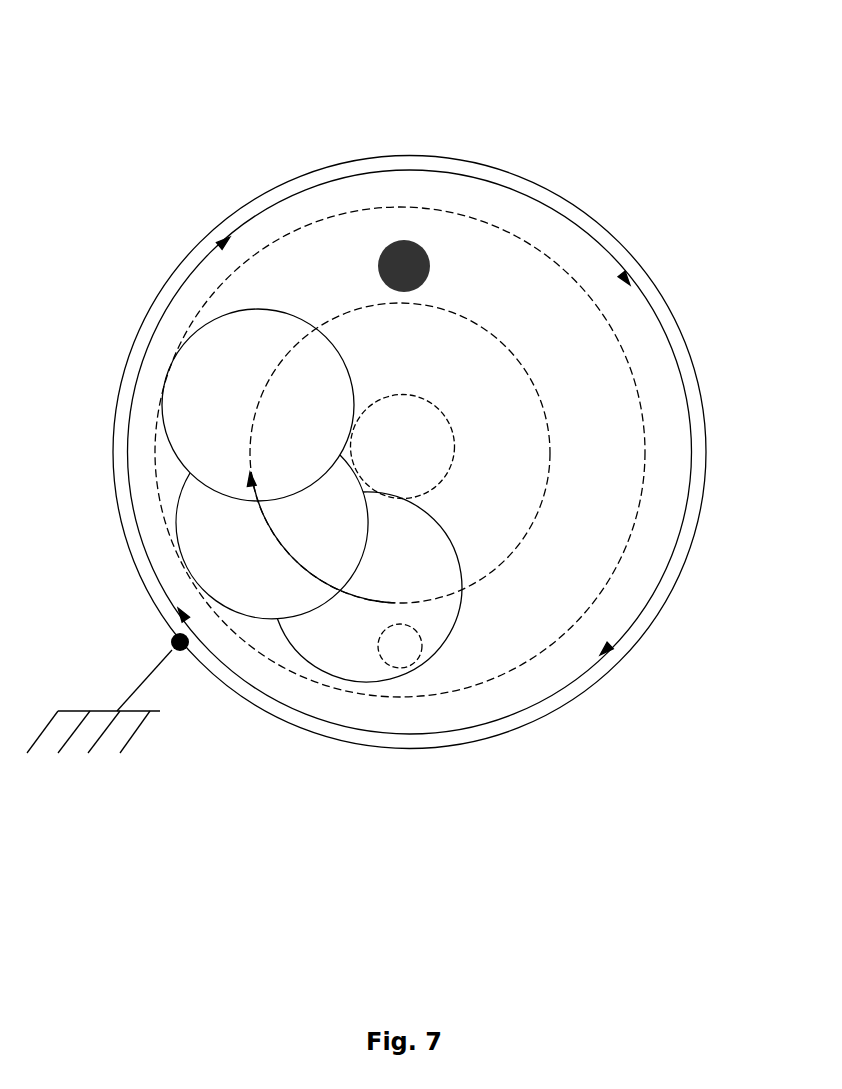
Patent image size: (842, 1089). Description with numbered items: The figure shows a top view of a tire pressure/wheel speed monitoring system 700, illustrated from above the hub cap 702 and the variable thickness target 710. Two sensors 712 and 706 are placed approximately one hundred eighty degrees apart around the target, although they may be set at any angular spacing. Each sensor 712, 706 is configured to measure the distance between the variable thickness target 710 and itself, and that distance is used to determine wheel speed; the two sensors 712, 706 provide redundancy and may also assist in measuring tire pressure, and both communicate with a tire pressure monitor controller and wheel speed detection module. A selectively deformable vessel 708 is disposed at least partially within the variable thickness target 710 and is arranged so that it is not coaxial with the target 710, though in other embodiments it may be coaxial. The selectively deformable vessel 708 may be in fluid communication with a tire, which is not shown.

The tire pressure/wheel speed monitoring system 700 is at (205, 173).
The hub cap 702 is at (553, 190).
The sensor 706 is at (398, 663).
The selectively deformable vessel 708 is at (250, 587).
The variable thickness target 710 is at (583, 282).
The sensor 712 is at (408, 245).